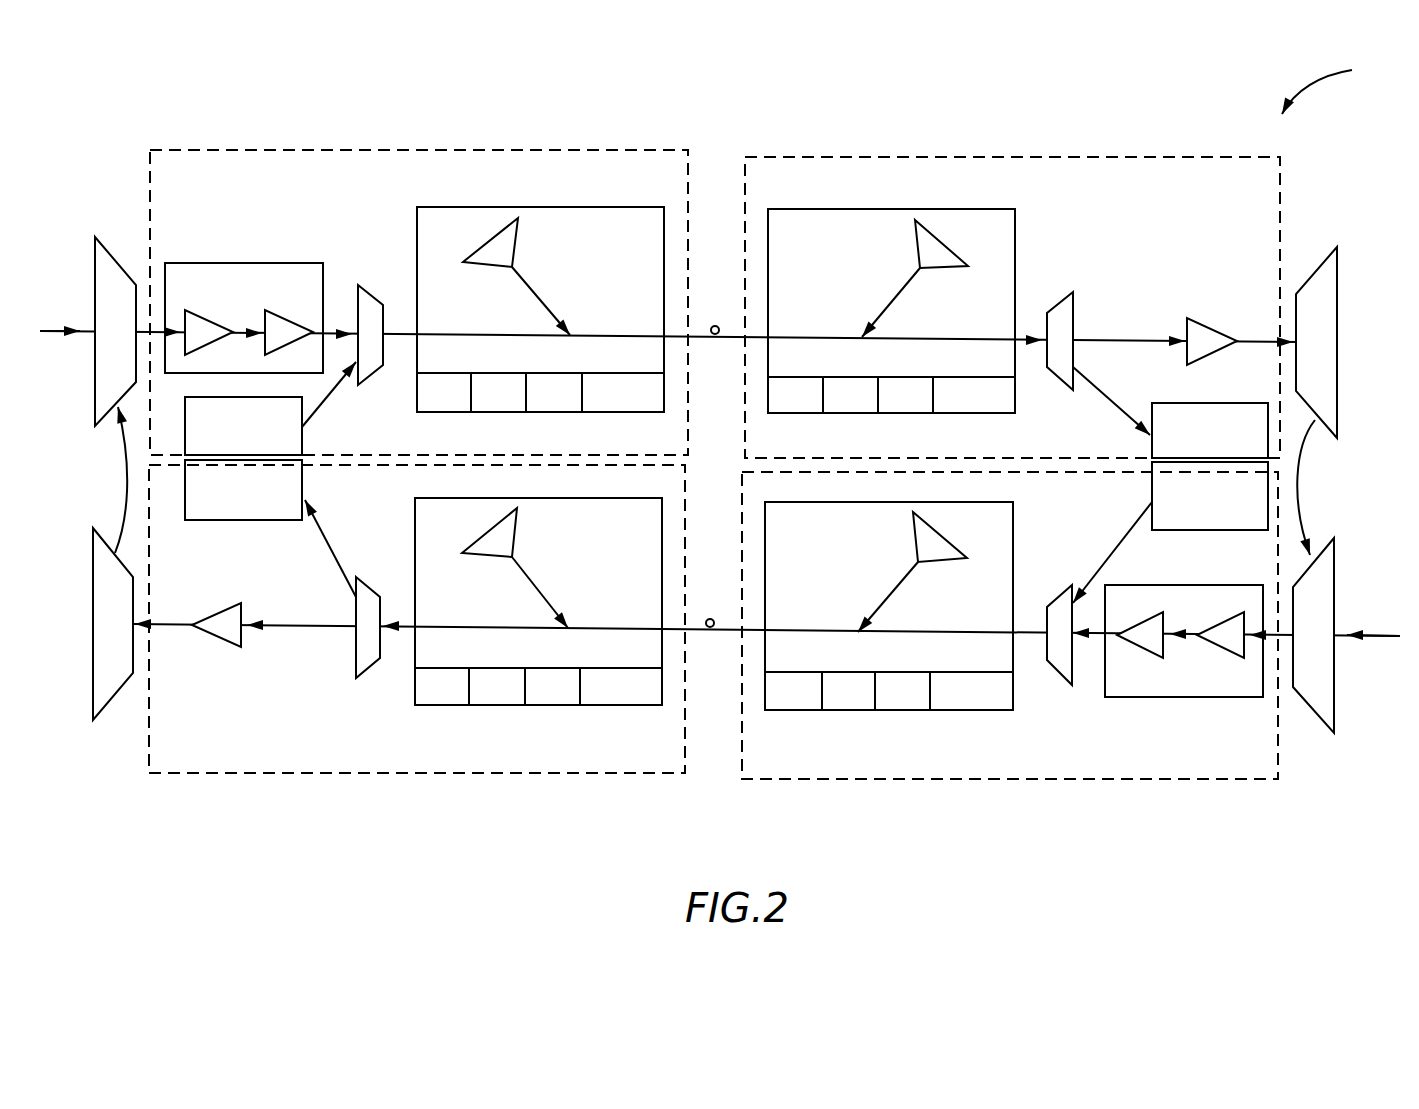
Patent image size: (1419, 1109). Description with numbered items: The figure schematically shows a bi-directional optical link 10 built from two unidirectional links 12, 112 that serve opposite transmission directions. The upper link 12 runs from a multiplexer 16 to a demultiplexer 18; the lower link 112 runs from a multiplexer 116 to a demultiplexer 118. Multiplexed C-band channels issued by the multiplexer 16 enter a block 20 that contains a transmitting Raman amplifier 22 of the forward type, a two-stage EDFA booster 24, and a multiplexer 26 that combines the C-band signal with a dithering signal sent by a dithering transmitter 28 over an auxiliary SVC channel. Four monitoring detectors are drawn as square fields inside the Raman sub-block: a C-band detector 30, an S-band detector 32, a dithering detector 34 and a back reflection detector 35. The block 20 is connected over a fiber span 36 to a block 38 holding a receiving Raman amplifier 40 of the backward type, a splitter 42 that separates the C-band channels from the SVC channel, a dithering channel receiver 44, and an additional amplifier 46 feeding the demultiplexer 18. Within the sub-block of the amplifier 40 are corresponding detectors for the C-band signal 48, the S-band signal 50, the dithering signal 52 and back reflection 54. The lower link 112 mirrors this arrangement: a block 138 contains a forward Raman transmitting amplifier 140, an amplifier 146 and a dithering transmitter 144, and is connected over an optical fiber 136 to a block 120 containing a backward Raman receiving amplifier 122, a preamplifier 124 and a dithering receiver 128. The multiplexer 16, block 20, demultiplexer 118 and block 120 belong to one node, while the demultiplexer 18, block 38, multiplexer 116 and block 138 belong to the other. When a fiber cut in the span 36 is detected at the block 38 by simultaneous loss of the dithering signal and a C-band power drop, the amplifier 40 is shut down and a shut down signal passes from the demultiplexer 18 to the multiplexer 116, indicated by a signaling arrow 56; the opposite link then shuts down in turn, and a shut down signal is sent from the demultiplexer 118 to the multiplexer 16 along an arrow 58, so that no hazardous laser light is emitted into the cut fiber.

The bi-directional optical link 10 is at (1330, 84).
The unidirectional link 12 is at (60, 331).
The multiplexer 16 is at (108, 253).
The demultiplexer 18 is at (1317, 268).
The block 20 is at (305, 150).
The transmitting Raman amplifier 22 is at (531, 311).
The two-stage EDFA booster amplifier 24 is at (215, 263).
The multiplexer 26 is at (375, 297).
The dithering transmitter 28 is at (252, 397).
The C-band signal detector 30 is at (611, 413).
The S-band signal detector 32 is at (536, 413).
The dithering signal detector 34 is at (503, 413).
The back reflection detector 35 is at (450, 413).
The fiber span 36 is at (716, 326).
The block 38 is at (1090, 157).
The receiving Raman amplifier 40 is at (886, 311).
The demultiplexer (splitter) 42 is at (1075, 322).
The dithering channel receiver 44 is at (1195, 403).
The additional amplifier 46 is at (1203, 320).
The C-band signal monitoring detector 48 is at (964, 414).
The S-band signal monitoring detector 50 is at (892, 414).
The dithering signal monitoring detector 52 is at (860, 414).
The back reflection monitoring detector 54 is at (805, 414).
The signaling arrow 56 is at (1303, 481).
The signaling arrow 58 is at (125, 481).
The unidirectional link 112 is at (1392, 634).
The multiplexer 116 is at (1308, 710).
The demultiplexer 118 is at (116, 702).
The block 120 is at (302, 774).
The receiving Raman amplifier 122 is at (413, 560).
The preamplifier 124 is at (218, 648).
The dithering signal receiver 128 is at (217, 522).
The optical fiber 136 is at (711, 619).
The block 138 is at (1085, 780).
The transmitting power amplifier 140 is at (1015, 558).
The dithering transmitter 144 is at (1177, 531).
The amplifier 146 is at (1147, 698).